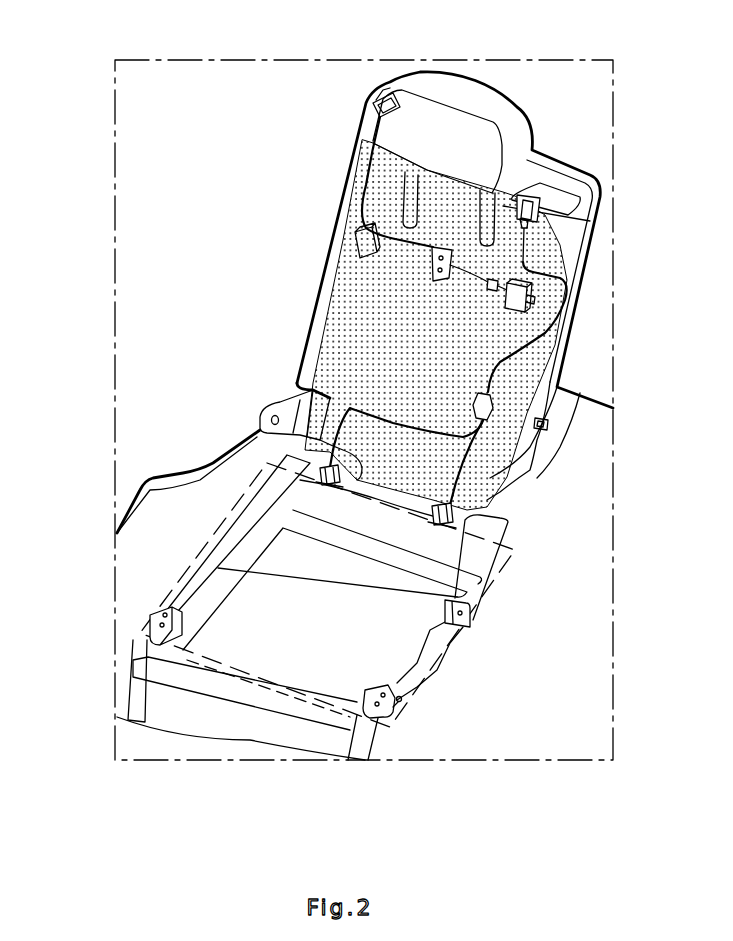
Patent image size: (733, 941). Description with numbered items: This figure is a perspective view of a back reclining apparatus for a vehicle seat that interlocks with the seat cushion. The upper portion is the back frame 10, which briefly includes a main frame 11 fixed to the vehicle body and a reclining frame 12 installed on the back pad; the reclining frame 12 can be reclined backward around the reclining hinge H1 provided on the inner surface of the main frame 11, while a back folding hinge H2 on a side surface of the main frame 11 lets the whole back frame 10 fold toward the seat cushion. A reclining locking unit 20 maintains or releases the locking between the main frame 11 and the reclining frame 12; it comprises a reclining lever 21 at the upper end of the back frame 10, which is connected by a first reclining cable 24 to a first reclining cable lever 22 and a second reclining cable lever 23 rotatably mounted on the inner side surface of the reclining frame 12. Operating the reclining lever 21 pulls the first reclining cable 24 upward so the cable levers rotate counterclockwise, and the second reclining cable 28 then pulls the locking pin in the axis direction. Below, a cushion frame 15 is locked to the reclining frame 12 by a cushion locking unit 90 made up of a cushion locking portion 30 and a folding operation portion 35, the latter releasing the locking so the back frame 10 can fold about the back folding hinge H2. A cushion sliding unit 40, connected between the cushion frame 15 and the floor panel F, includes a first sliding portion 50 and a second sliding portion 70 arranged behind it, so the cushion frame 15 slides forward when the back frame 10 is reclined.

The back frame 10 is at (365, 302).
The main frame 11 is at (330, 243).
The reclining frame 12 is at (310, 296).
The cushion frame 15 is at (507, 570).
The reclining locking unit 20 is at (348, 176).
The reclining lever 21 is at (382, 96).
The first reclining cable lever 22 is at (447, 252).
The second reclining cable lever 23 is at (445, 252).
The first reclining cable 24 is at (360, 203).
The second reclining cable 28 is at (495, 270).
The cushion locking portion 30 is at (487, 518).
The folding operation portion 35 is at (543, 225).
The cushion sliding unit 40 is at (342, 607).
The first sliding portion 50 is at (130, 607).
The second sliding portion 70 is at (238, 485).
The cushion locking unit 90 is at (647, 287).
The reclining hinge H1 is at (549, 423).
The back folding hinge H2 is at (262, 405).
The floor panel F is at (602, 481).